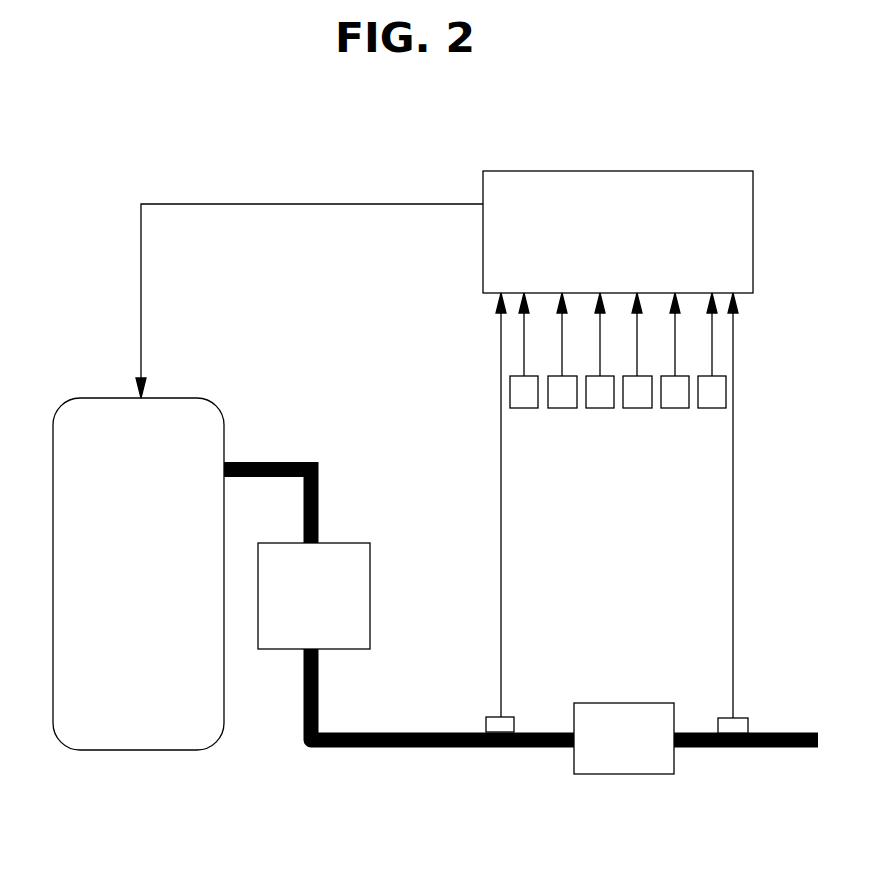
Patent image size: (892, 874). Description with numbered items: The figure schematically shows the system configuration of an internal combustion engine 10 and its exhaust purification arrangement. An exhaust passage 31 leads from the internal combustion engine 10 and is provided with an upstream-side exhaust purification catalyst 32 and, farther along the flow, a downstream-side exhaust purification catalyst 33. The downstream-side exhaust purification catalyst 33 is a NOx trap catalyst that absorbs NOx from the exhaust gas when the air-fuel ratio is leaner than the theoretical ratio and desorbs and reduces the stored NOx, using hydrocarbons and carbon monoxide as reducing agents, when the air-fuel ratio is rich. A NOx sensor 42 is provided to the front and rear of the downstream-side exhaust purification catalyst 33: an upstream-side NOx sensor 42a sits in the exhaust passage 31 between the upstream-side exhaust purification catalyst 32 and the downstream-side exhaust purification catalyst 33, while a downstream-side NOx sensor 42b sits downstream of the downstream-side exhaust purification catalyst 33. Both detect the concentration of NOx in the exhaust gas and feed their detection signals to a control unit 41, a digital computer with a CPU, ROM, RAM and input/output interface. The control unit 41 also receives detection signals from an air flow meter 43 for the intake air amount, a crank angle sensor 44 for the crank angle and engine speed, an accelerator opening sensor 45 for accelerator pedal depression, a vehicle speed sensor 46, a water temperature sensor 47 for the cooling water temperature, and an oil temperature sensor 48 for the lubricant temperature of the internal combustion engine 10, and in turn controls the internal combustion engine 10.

The internal combustion engine 10 is at (93, 398).
The exhaust passage 31 is at (396, 750).
The upstream-side exhaust purification catalyst 32 is at (278, 652).
The downstream-side exhaust purification catalyst 33 is at (621, 762).
The control unit 41 is at (690, 170).
The NOx sensor 42 is at (657, 513).
The upstream-side NOx sensor 42a is at (508, 717).
The downstream-side NOx sensor 42b is at (740, 718).
The air flow meter 43 is at (524, 408).
The crank angle sensor 44 is at (562, 408).
The accelerator opening sensor 45 is at (600, 408).
The vehicle speed sensor 46 is at (637, 408).
The water temperature sensor 47 is at (675, 408).
The oil temperature sensor 48 is at (712, 408).